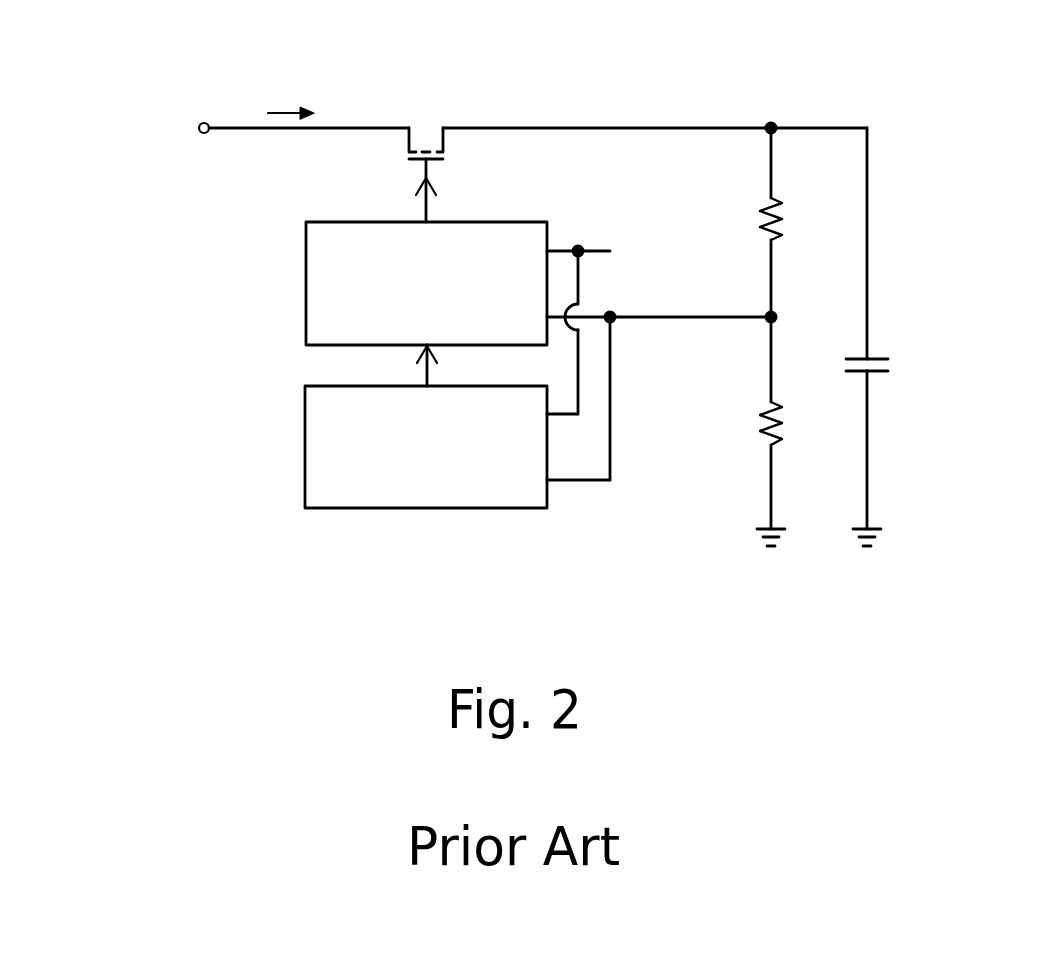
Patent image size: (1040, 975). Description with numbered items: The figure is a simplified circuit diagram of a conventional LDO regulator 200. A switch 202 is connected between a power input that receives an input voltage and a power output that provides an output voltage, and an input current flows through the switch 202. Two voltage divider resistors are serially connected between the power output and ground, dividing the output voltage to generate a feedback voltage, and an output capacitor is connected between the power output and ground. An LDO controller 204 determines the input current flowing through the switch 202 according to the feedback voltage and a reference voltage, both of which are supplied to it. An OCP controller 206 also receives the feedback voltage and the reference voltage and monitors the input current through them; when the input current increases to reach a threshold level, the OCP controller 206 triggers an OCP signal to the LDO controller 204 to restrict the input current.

The conventional LDO regulator 200 is at (947, 113).
The switch 202 is at (419, 114).
The LDO controller 204 is at (306, 280).
The OCP controller 206 is at (306, 444).